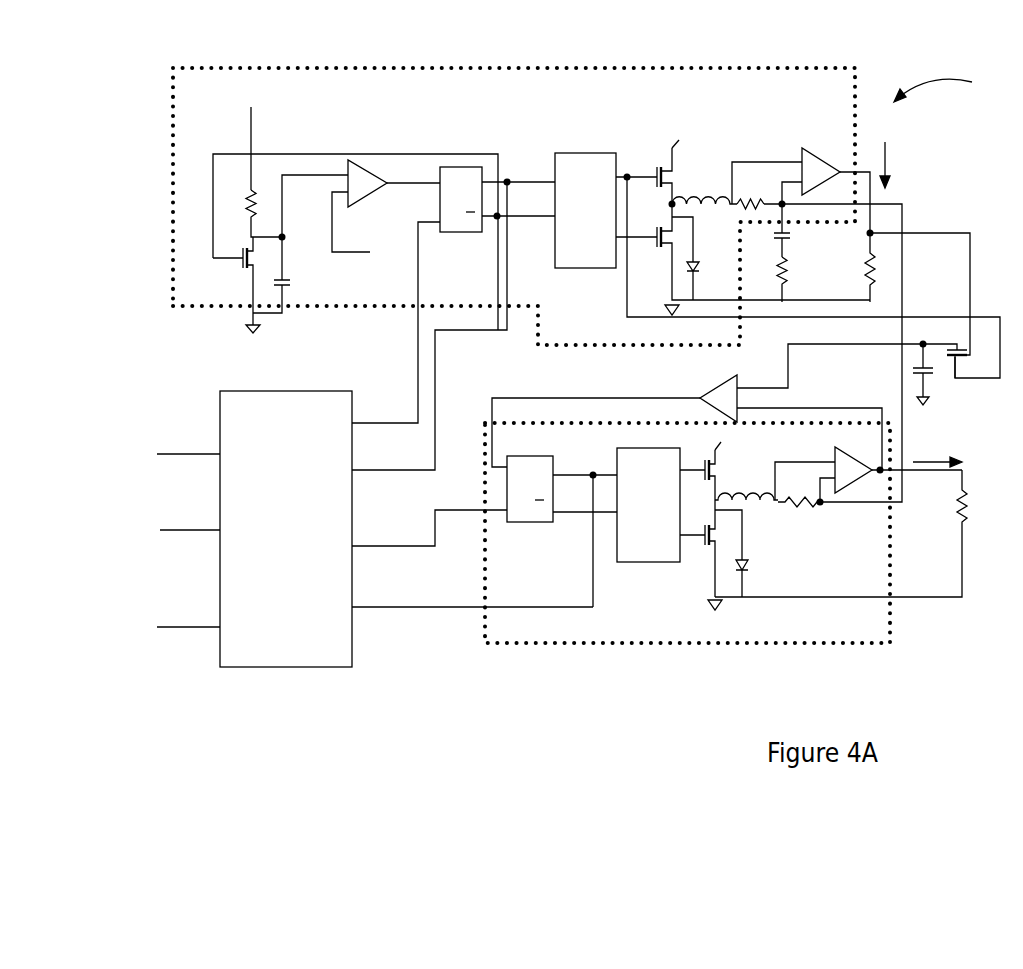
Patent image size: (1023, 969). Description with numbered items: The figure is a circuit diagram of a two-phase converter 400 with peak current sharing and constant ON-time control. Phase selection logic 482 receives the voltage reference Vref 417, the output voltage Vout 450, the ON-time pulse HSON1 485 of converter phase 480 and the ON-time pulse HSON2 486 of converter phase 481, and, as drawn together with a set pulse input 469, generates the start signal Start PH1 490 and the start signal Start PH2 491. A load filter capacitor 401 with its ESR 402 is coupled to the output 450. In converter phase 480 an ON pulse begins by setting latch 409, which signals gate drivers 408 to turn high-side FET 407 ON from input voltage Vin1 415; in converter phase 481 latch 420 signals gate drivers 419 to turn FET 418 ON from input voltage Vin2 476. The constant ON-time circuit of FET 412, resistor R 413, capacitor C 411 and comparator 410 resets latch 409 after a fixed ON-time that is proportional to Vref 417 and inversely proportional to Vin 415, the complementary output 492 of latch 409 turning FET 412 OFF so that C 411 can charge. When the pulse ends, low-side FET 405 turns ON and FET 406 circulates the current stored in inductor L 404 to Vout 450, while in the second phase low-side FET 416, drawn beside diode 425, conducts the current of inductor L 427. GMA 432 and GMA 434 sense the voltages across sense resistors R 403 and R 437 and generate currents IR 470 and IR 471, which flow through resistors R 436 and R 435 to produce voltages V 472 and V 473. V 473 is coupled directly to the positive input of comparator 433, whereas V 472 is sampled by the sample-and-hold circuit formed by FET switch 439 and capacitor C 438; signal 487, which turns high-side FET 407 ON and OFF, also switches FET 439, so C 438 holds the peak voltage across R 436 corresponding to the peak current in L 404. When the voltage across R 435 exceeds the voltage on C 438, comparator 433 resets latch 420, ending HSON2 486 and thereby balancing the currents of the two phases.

The two-phase converter 400 is at (950, 86).
The load filter capacitor 401 is at (793, 238).
The ESR 402 is at (788, 273).
The sense resistor 403 is at (745, 200).
The inductor 404 is at (703, 193).
The low-side FET 405 is at (657, 257).
The FET 406 is at (703, 257).
The high-side FET 407 is at (653, 183).
The gate drivers 408 is at (586, 153).
The latch 409 is at (455, 167).
The comparator 410 is at (370, 167).
The capacitor 411 is at (297, 273).
The FET 412 is at (248, 247).
The resistor 413 is at (255, 190).
The input voltage Vin1 415 is at (280, 90).
The low-side FET 416 is at (703, 550).
The voltage reference Vref 417 is at (167, 436).
The FET 418 is at (717, 472).
The gate drivers 419 is at (647, 563).
The latch 420 is at (523, 525).
The diode phase 2 425 is at (748, 570).
The inductor 427 is at (750, 507).
The GMA 432 is at (822, 152).
The comparator 433 is at (717, 385).
The GMA 434 is at (853, 482).
The resistor 435 is at (970, 508).
The resistor 436 is at (877, 258).
The sense resistor 437 is at (802, 510).
The capacitor 438 is at (930, 372).
The FET switch 439 is at (960, 363).
The output voltage Vout 450 is at (175, 533).
The set pulse input 469 is at (172, 628).
The current IR 470 is at (888, 172).
The current IR 471 is at (932, 462).
The voltage V 472 is at (972, 257).
The voltage V 473 is at (800, 407).
The input voltage Vin2 476 is at (753, 450).
The converter phase 480 is at (692, 63).
The converter phase 481 is at (893, 565).
The phase selection logic 482 is at (353, 638).
The HSON1 485 is at (523, 160).
The HSON2 486 is at (578, 458).
The signal 487 is at (627, 307).
The Start PH1 490 is at (367, 403).
The Start PH2 491 is at (380, 533).
The complementary output 492 is at (520, 218).